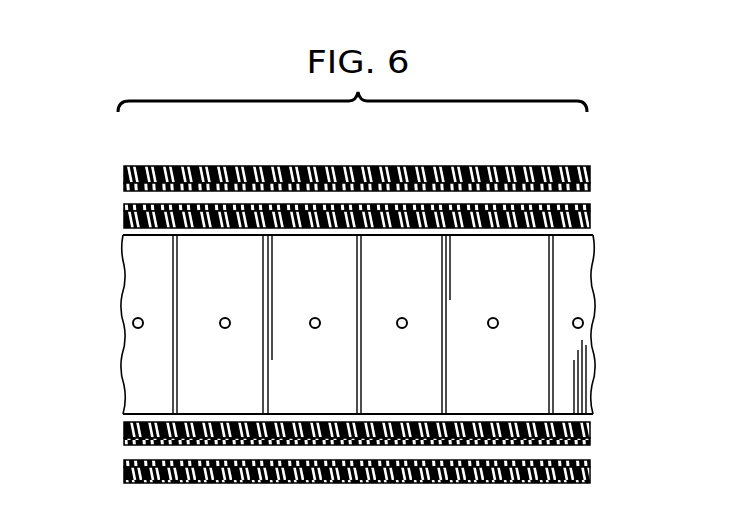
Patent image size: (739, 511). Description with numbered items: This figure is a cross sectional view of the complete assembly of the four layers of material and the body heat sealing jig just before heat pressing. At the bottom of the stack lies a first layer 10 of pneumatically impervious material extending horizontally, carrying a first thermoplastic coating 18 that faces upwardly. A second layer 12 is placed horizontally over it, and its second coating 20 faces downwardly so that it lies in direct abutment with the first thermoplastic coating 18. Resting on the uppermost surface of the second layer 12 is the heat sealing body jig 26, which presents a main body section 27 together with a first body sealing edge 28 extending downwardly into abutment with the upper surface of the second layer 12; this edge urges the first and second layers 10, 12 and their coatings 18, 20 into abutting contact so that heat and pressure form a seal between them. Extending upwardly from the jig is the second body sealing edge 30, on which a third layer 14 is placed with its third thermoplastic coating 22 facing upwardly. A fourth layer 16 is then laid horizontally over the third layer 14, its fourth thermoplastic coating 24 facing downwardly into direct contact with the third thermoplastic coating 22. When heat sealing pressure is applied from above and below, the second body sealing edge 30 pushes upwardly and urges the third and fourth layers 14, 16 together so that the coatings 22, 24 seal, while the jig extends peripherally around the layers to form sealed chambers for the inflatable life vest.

The first layer 10 is at (590, 171).
The first thermoplastic coating 18 is at (590, 188).
The second coating 20 is at (590, 206).
The second layer 12 is at (590, 221).
The third layer 14 is at (590, 425).
The third thermoplastic coating 22 is at (590, 442).
The fourth thermoplastic coating 24 is at (590, 462).
The fourth layer 16 is at (590, 479).
The heat sealing body jig 26 is at (480, 298).
The main body section 27 is at (212, 298).
The first body sealing edge 28 is at (123, 236).
The second body sealing edge 30 is at (123, 417).